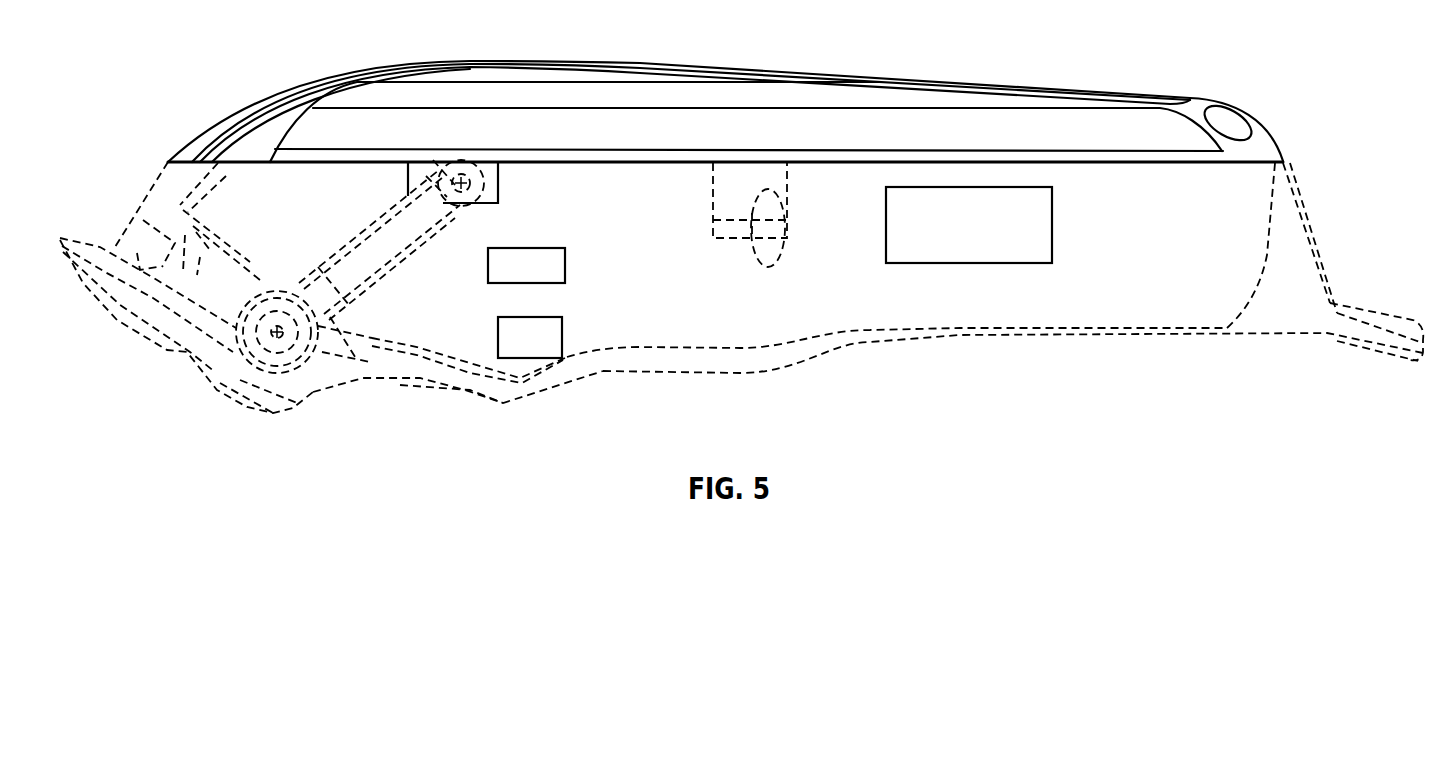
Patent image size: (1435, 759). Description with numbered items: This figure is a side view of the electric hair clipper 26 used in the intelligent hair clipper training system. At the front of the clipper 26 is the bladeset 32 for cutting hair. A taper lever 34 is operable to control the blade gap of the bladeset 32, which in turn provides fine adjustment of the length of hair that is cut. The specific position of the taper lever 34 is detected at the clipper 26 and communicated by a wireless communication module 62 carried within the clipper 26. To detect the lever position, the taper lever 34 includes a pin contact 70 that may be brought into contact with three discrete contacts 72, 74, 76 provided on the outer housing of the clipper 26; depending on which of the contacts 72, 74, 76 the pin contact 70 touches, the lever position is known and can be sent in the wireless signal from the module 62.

The electric hair clipper 26 is at (1243, 238).
The bladeset 32 is at (197, 357).
The taper lever 34 is at (400, 253).
The wireless communication module 62 is at (968, 187).
The pin contact 70 is at (463, 176).
The discrete contact 72 is at (500, 184).
The discrete contact 74 is at (565, 262).
The discrete contact 76 is at (562, 338).